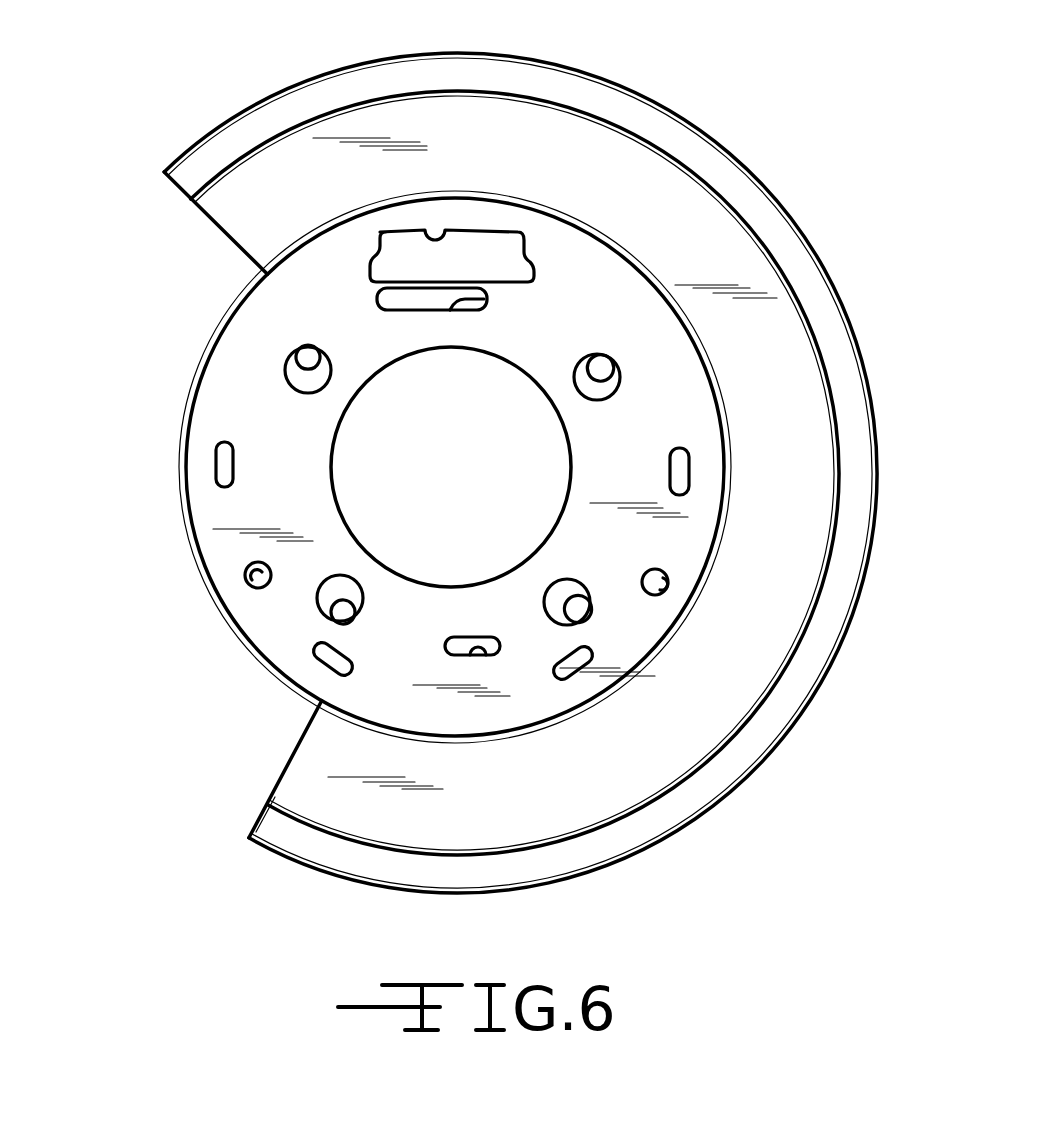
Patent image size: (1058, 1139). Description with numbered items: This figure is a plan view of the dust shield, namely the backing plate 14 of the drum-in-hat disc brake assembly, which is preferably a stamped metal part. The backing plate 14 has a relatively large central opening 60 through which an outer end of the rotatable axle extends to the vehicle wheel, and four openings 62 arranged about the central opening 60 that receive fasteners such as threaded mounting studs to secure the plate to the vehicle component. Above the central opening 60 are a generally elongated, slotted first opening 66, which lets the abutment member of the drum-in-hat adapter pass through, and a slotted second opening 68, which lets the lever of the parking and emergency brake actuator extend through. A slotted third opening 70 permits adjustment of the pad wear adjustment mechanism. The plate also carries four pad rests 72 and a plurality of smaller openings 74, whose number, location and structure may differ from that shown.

The backing plate 14 is at (640, 97).
The central opening 60 is at (332, 443).
The openings 62 is at (307, 346).
The first slotted opening 66 is at (443, 233).
The second slotted opening 68 is at (488, 298).
The third slotted opening 70 is at (485, 653).
The pad rests 72 is at (213, 468).
The openings 74 is at (270, 578).